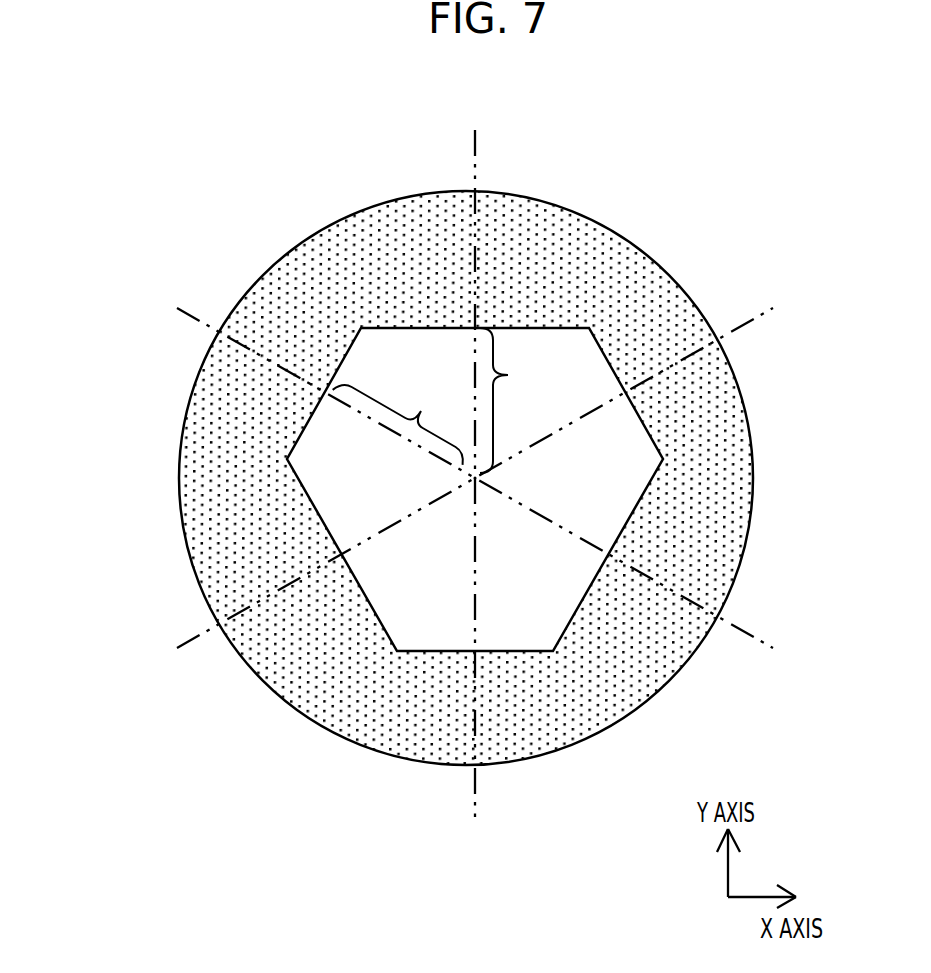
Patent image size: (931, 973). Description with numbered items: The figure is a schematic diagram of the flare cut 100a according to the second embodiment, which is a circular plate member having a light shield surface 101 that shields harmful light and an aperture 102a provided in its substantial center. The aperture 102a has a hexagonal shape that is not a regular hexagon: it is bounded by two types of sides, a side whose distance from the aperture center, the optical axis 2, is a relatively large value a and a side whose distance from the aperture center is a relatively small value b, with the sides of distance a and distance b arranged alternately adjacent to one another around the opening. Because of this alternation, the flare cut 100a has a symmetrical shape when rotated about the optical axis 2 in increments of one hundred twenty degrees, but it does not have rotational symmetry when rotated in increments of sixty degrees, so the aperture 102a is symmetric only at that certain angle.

The flare cut 100a is at (657, 180).
The light shield surface 101 is at (682, 291).
The aperture 102a is at (412, 623).
The optical axis 2 is at (470, 478).
The distance a is at (404, 416).
The distance b is at (510, 400).